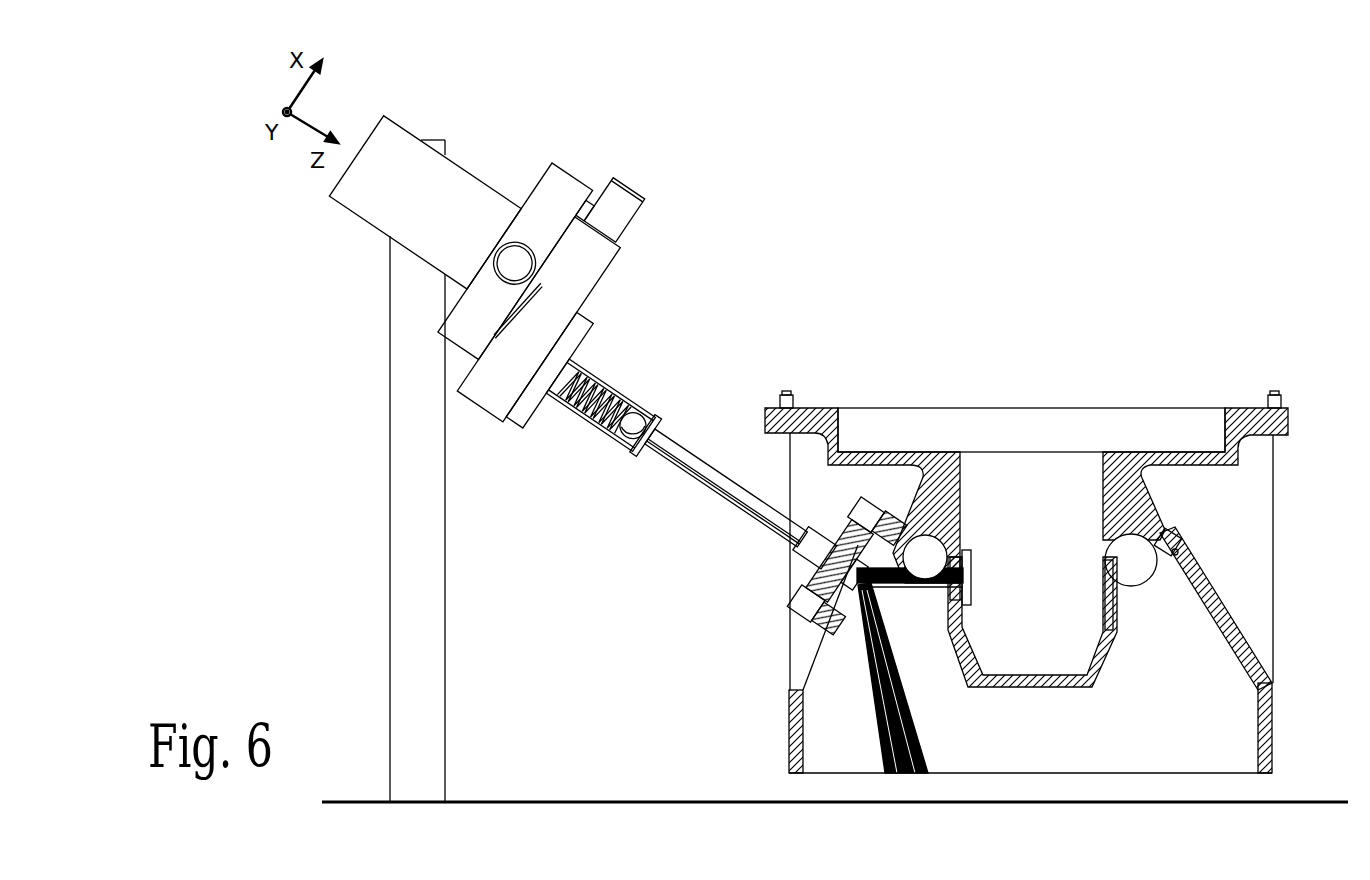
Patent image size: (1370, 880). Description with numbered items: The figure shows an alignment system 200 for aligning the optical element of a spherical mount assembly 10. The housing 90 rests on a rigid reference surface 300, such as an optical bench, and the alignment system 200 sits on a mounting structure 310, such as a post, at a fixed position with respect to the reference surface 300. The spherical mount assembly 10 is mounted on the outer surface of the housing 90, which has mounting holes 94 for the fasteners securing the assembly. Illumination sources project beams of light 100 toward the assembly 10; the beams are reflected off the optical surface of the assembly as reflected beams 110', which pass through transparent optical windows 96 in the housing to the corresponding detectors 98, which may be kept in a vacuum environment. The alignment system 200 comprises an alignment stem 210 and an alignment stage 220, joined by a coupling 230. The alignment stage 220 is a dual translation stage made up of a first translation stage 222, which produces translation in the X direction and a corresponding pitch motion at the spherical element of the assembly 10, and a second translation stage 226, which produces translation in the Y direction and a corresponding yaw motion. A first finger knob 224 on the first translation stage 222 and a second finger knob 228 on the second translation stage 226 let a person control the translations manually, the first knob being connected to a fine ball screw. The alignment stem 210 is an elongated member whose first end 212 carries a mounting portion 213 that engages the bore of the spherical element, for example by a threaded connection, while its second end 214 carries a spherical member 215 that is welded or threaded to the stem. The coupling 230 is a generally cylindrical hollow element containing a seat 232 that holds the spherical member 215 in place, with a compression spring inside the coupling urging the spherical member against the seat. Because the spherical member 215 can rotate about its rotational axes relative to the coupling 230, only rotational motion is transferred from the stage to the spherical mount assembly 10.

The spherical mount assembly 10 is at (838, 514).
The housing 90 is at (1290, 418).
The mounting holes 94 is at (1071, 732).
The transparent optical windows 96 is at (948, 597).
The detectors 98 is at (972, 563).
The beams of light 100 is at (939, 745).
The reflected light beam 110' is at (910, 596).
The alignment system 200 is at (732, 203).
The alignment stem 210 is at (762, 523).
The first end 212 is at (808, 553).
The mounting portion 213 is at (800, 618).
The second end 214 is at (653, 435).
The spherical member 215 is at (628, 428).
The alignment stage 220 is at (539, 150).
The first translation stage 222 is at (587, 282).
The first finger knob 224 is at (630, 217).
The second translation stage 226 is at (568, 183).
The second finger knob 228 is at (508, 275).
The coupling 230 is at (583, 412).
The seat 232 is at (640, 448).
The rigid reference surface 300 is at (1021, 835).
The mounting structure 310 is at (410, 545).